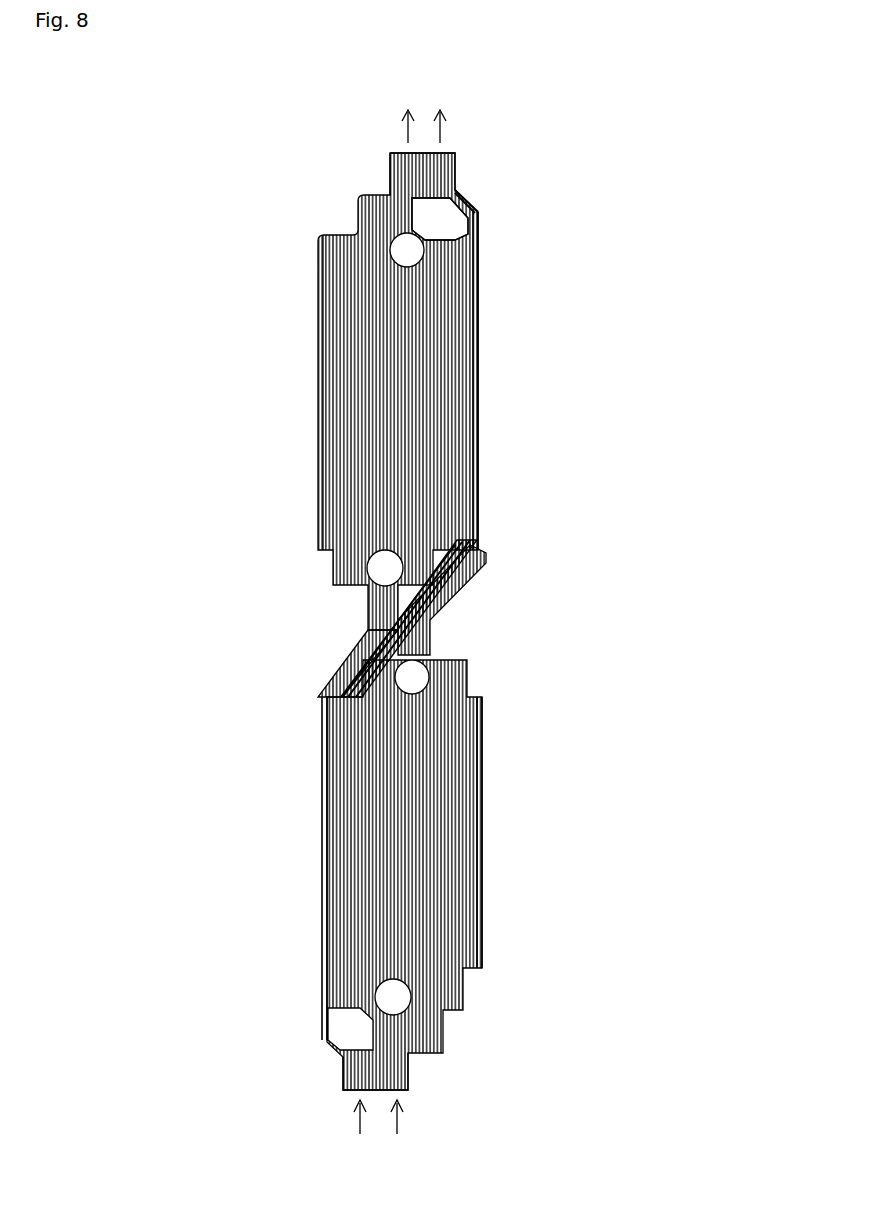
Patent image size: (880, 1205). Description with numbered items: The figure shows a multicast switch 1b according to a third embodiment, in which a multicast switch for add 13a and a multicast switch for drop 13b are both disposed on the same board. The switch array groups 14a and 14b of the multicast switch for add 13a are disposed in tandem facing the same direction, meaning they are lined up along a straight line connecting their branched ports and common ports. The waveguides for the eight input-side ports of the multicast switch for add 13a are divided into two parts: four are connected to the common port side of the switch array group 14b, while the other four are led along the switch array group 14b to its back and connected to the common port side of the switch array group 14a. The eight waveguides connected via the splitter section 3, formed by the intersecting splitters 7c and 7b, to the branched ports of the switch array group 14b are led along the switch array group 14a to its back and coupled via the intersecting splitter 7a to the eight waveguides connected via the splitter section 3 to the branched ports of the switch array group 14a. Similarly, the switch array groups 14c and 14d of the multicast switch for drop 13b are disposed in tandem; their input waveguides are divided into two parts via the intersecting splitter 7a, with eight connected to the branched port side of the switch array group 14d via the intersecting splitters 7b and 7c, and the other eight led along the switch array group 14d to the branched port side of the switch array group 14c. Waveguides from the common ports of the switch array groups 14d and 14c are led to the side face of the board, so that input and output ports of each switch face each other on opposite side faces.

The multicast switch 1b is at (507, 133).
The splitter section 3 is at (467, 182).
The intersecting splitter 7a is at (399, 621).
The intersecting splitter 7b is at (409, 618).
The intersecting splitter 7c is at (442, 600).
The multicast switch for add 13a is at (483, 266).
The multicast switch for drop 13b is at (357, 594).
The switch array group 14a is at (482, 334).
The switch array group 14b is at (482, 753).
The switch array group 14c is at (312, 430).
The switch array group 14d is at (318, 849).